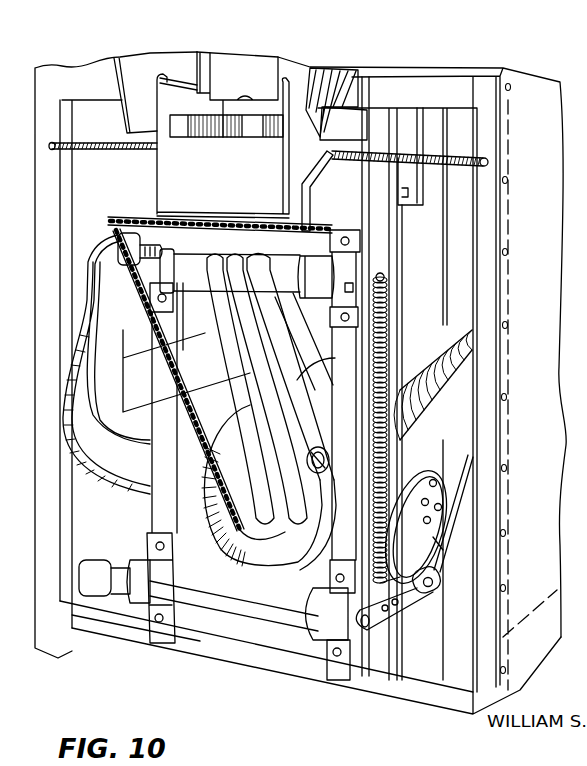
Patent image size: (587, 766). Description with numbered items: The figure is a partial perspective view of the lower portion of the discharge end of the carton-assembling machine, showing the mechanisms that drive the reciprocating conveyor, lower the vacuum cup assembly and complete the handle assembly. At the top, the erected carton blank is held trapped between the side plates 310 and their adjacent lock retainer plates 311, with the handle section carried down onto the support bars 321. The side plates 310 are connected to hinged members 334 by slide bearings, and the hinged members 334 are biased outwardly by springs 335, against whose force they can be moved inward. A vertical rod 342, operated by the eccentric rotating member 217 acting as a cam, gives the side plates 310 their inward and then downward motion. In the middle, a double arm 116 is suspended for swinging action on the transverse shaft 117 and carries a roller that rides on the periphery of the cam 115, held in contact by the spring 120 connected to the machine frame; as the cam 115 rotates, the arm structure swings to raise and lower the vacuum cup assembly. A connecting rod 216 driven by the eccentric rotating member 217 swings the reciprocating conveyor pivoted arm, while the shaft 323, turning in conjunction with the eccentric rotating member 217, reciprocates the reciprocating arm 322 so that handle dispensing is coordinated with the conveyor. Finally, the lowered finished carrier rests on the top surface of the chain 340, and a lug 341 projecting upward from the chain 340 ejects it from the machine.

The lock retainer plates 311 is at (295, 64).
The side plates 310 is at (157, 168).
The support bars 321 is at (253, 128).
The springs 335 is at (110, 145).
The hinged members 334 is at (290, 178).
The lug 341 is at (147, 220).
The chain 340 is at (160, 392).
The transverse shaft 117 is at (277, 268).
The double arm 116 is at (276, 345).
The cam 115 is at (300, 568).
The vertical rod 342 is at (398, 340).
The spring 120 is at (455, 385).
The eccentric rotating member 217 is at (456, 452).
The connecting rod 216 is at (462, 514).
The reciprocating arm 322 is at (128, 558).
The shaft 323 is at (222, 605).